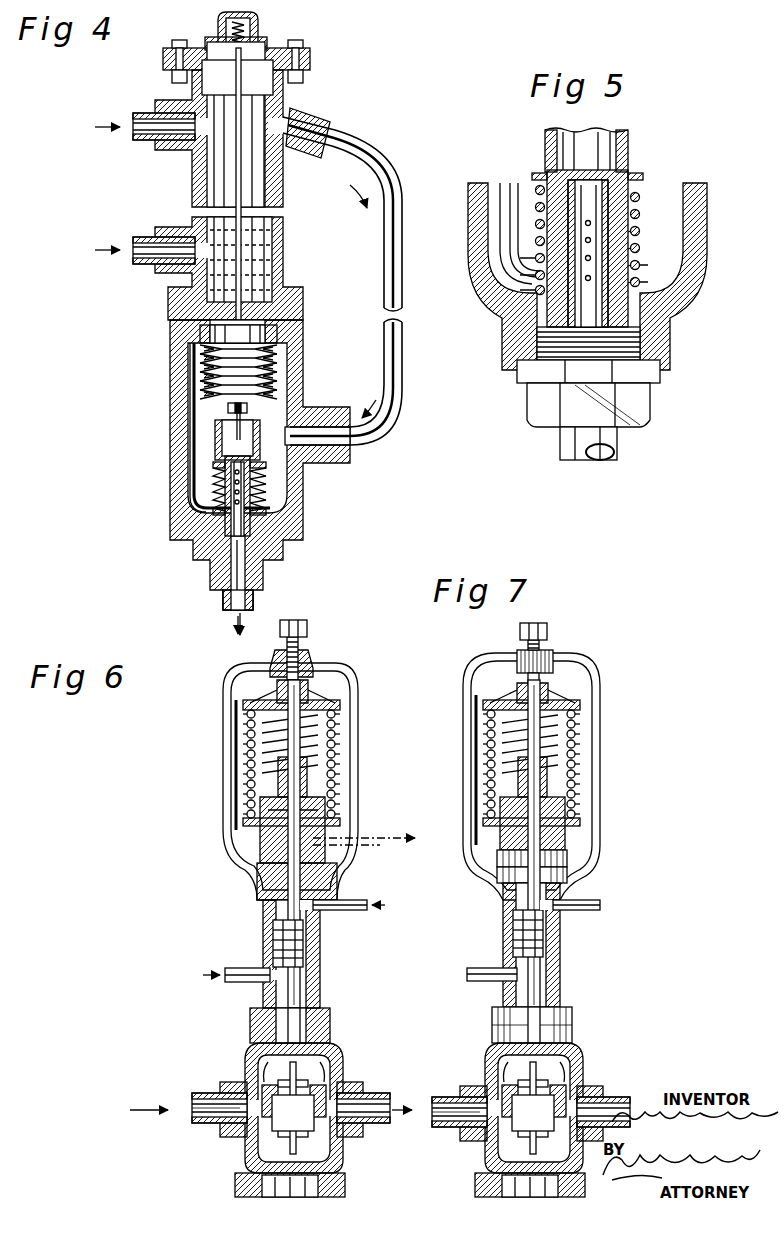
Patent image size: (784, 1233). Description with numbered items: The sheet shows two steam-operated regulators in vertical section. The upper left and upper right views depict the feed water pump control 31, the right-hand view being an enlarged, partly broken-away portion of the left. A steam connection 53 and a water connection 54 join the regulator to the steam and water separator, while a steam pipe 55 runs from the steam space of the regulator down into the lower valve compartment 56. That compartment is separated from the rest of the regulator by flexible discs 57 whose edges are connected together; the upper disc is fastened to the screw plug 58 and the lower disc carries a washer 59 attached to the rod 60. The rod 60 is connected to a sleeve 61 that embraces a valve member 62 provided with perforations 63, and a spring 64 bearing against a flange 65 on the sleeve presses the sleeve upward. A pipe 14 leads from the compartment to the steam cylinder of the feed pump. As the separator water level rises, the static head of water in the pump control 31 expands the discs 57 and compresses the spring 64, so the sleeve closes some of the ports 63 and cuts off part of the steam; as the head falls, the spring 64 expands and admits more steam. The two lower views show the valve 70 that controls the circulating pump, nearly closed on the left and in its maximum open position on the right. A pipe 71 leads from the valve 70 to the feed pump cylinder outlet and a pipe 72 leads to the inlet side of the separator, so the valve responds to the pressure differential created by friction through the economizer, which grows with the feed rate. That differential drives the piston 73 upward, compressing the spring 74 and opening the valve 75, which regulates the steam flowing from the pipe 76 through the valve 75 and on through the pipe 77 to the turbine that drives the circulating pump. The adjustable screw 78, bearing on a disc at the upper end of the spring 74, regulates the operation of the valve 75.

In FIG. 4, the pipe 14 is at (226, 598).
In FIG. 5, the pipe 14 is at (561, 446).
In FIG. 4, the feed water pump control 31 is at (284, 279).
In FIG. 4, the steam connection 53 is at (149, 113).
In FIG. 4, the water connection 54 is at (143, 235).
In FIG. 4, the steam pipe 55 is at (378, 173).
In FIG. 5, the lower valve compartment 56 is at (700, 263).
In FIG. 4, the flexible discs 57 is at (212, 379).
In FIG. 4, the screw plug 58 is at (198, 343).
In FIG. 4, the washer 59 is at (249, 410).
In FIG. 4, the rod 60 is at (262, 345).
In FIG. 4, the sleeve 61 is at (259, 455).
In FIG. 5, the sleeve 61 is at (630, 166).
In FIG. 4, the valve member 62 is at (257, 498).
In FIG. 5, the valve member 62 is at (620, 240).
In FIG. 4, the perforations 63 is at (215, 494).
In FIG. 5, the perforations 63 is at (612, 213).
In FIG. 4, the spring 64 is at (214, 518).
In FIG. 5, the spring 64 is at (636, 284).
In FIG. 4, the flange 65 is at (216, 473).
In FIG. 5, the flange 65 is at (645, 180).
In FIG. 6, the valve 70 is at (228, 1092).
In FIG. 7, the valve 70 is at (466, 1096).
In FIG. 6, the pipe 71 is at (252, 968).
In FIG. 7, the pipe 71 is at (493, 968).
In FIG. 6, the pipe 72 is at (352, 916).
In FIG. 7, the pipe 72 is at (590, 916).
In FIG. 6, the piston 73 is at (304, 958).
In FIG. 7, the piston 73 is at (546, 956).
In FIG. 6, the spring 74 is at (322, 740).
In FIG. 7, the spring 74 is at (562, 740).
In FIG. 6, the valve 75 is at (296, 1090).
In FIG. 7, the valve 75 is at (536, 1090).
In FIG. 6, the pipe 76 is at (226, 1115).
In FIG. 7, the pipe 76 is at (464, 1118).
In FIG. 6, the pipe 77 is at (364, 1098).
In FIG. 7, the pipe 77 is at (604, 1102).
In FIG. 6, the adjustable screw 78 is at (300, 652).
In FIG. 7, the adjustable screw 78 is at (544, 650).